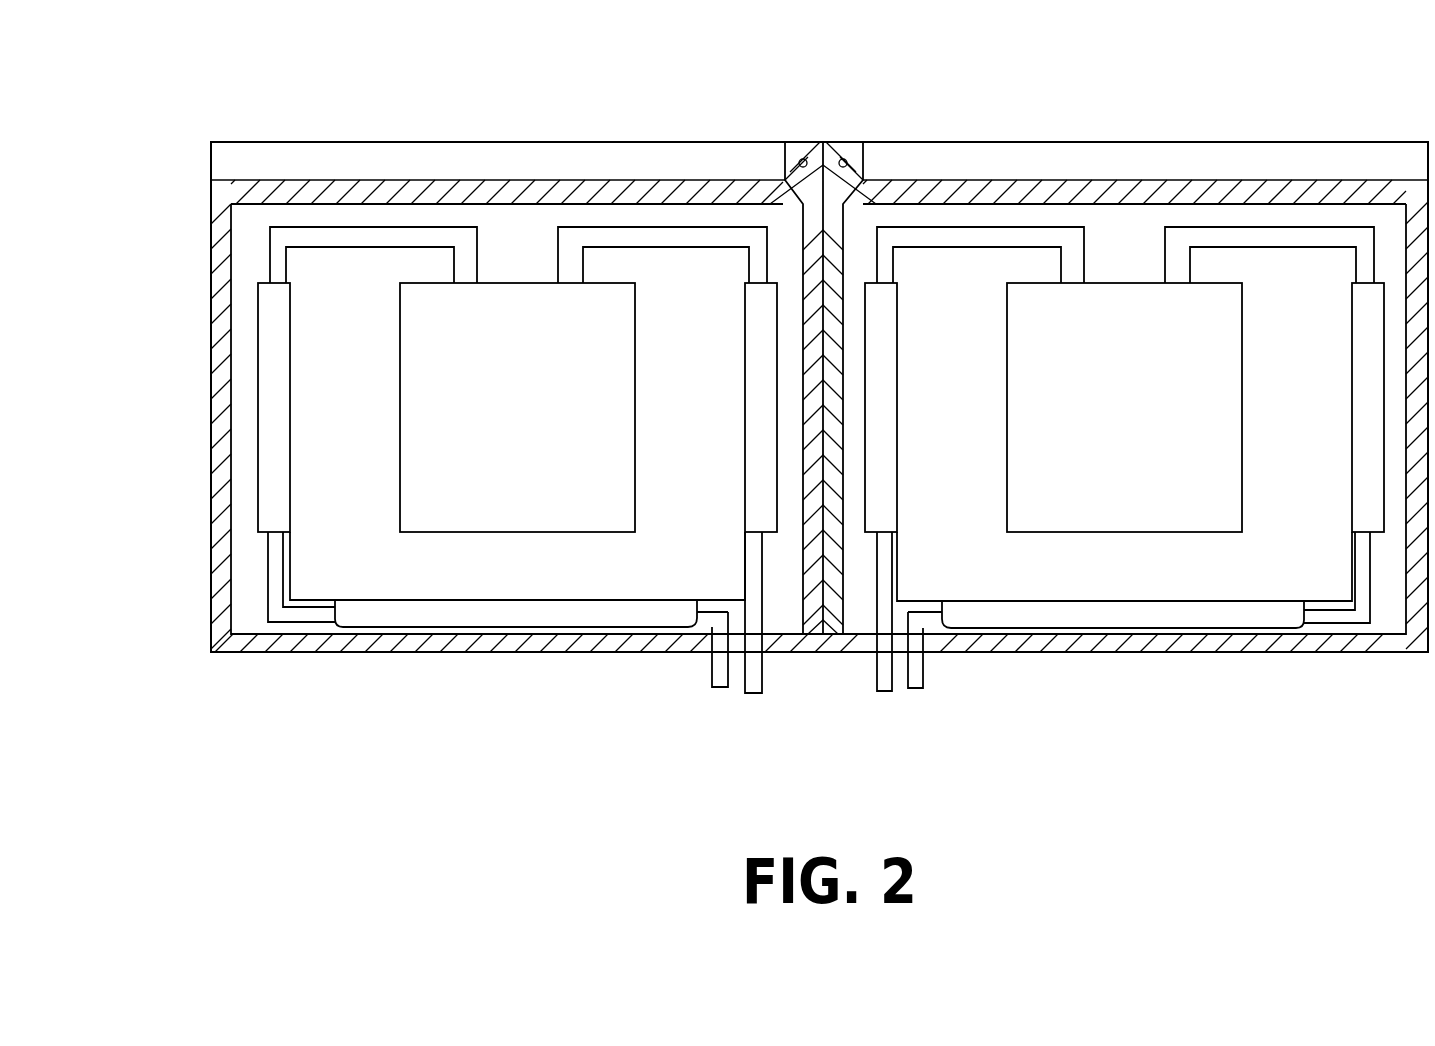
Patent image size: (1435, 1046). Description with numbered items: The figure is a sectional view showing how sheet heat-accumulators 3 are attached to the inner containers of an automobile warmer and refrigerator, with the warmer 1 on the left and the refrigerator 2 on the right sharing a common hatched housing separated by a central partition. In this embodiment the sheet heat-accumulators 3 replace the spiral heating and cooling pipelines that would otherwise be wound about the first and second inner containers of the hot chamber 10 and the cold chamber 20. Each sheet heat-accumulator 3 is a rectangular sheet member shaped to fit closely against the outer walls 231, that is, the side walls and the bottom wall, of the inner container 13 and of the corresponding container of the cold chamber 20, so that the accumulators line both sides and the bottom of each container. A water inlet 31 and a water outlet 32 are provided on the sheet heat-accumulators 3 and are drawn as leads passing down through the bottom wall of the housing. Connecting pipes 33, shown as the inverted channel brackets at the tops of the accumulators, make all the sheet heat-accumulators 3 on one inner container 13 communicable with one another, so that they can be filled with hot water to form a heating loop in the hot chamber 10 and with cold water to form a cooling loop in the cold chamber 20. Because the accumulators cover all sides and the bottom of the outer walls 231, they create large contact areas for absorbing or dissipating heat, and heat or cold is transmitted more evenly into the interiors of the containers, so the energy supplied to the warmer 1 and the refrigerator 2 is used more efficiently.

The warmer 1 is at (466, 128).
The refrigerator 2 is at (1148, 130).
The hot chamber 10 is at (615, 215).
The cold chamber 20 is at (1235, 215).
The inner container 13 is at (250, 247).
The connecting pipes 33 is at (355, 235).
The sheet heat-accumulator 3 is at (270, 395).
The outer walls 231 is at (290, 548).
The water inlet 31 is at (752, 695).
The water outlet 32 is at (718, 688).